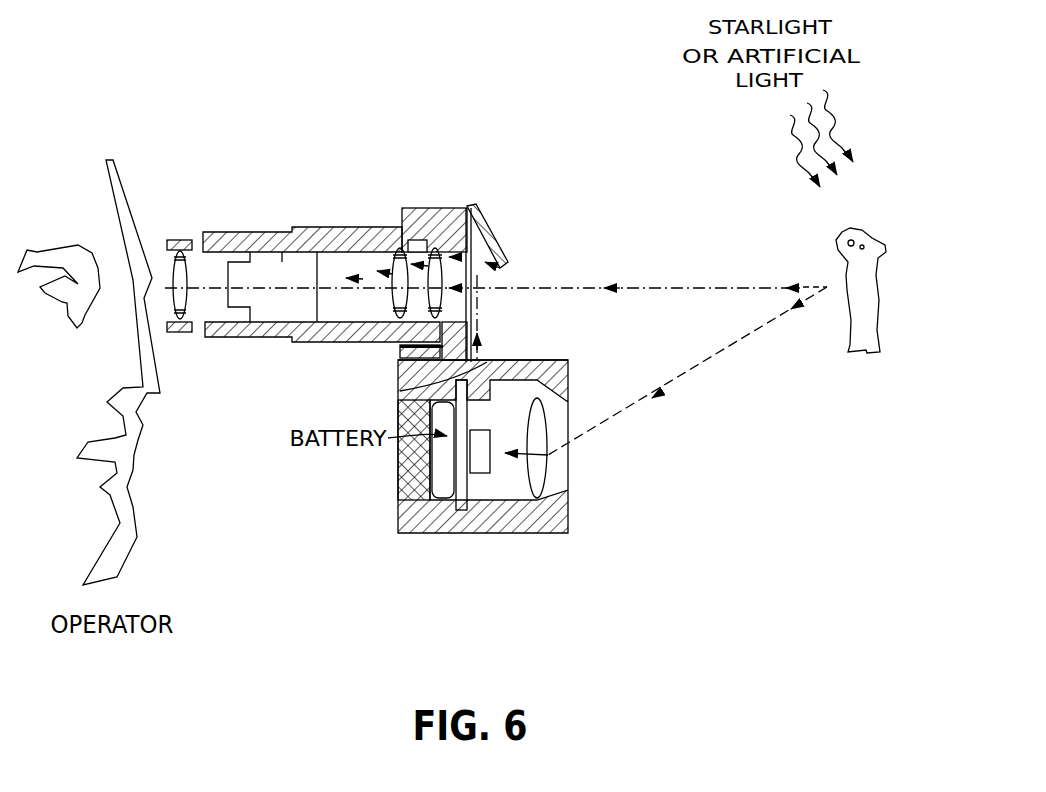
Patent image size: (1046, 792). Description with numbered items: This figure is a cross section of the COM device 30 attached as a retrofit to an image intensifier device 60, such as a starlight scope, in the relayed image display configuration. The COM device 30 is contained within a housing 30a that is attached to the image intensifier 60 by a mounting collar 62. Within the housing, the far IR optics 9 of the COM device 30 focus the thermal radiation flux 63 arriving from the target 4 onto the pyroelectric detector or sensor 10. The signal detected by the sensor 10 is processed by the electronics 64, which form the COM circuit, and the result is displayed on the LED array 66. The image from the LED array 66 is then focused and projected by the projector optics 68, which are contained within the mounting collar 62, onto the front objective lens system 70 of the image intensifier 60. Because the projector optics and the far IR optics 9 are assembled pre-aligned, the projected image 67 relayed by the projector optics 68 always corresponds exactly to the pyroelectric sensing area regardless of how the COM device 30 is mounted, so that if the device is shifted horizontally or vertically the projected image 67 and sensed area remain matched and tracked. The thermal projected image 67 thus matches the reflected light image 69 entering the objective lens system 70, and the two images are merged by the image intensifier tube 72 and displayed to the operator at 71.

The target 4 is at (845, 334).
The far IR optics 9 is at (540, 472).
The pyroelectric detector or sensor 10 is at (482, 463).
The COM device 30 is at (588, 376).
The housing 30a is at (528, 360).
The image intensifier device 60 is at (318, 212).
The mounting collar 62 is at (447, 207).
The thermal radiation flux 63 is at (733, 360).
The electronics 64 is at (462, 500).
The LED array 66 is at (400, 390).
The projected image 67 is at (502, 271).
The projector optics 68 is at (490, 232).
The reflected light image 69 is at (773, 283).
The front objective lens system 70 is at (426, 250).
The operator display location 71 is at (153, 322).
The image intensifier tube 72 is at (283, 258).